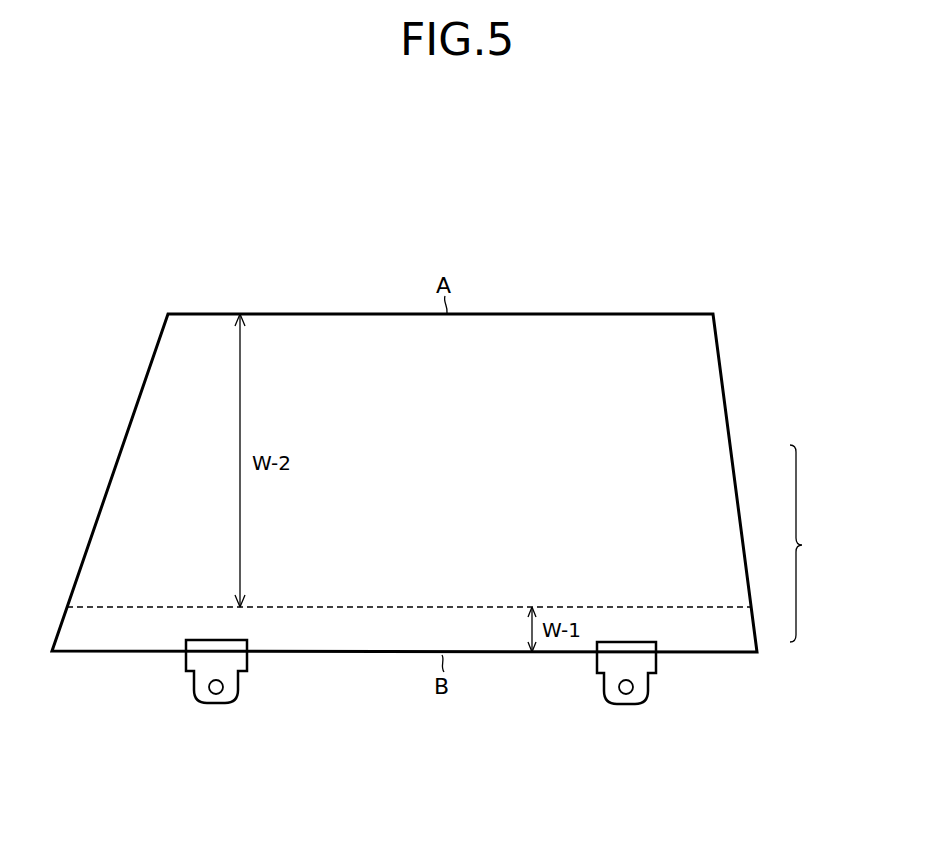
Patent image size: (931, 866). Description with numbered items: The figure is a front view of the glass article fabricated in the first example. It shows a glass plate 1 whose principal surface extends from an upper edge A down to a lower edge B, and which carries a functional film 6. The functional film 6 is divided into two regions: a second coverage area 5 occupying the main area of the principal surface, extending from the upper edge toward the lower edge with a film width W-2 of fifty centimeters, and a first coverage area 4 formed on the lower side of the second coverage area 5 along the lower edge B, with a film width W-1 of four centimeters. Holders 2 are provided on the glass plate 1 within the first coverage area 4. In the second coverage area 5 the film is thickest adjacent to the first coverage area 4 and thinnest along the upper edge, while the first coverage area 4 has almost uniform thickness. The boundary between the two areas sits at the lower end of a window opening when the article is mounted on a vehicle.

The glass plate 1 is at (640, 314).
The holders 2 is at (193, 683).
The first coverage area 4 is at (743, 638).
The second coverage area 5 is at (712, 473).
The functional film 6 is at (805, 543).